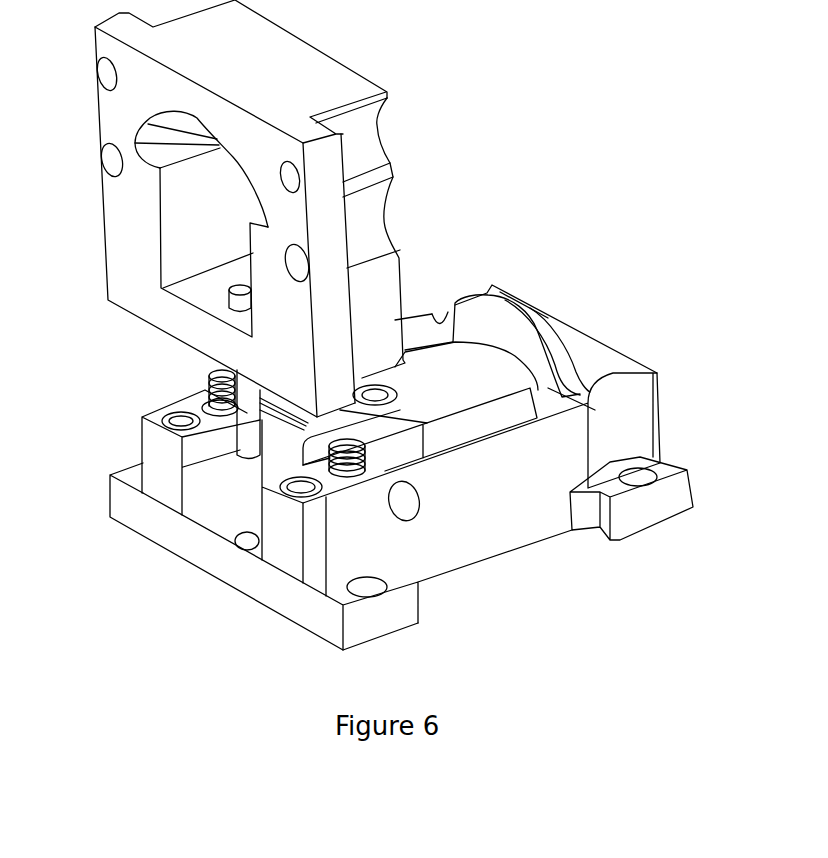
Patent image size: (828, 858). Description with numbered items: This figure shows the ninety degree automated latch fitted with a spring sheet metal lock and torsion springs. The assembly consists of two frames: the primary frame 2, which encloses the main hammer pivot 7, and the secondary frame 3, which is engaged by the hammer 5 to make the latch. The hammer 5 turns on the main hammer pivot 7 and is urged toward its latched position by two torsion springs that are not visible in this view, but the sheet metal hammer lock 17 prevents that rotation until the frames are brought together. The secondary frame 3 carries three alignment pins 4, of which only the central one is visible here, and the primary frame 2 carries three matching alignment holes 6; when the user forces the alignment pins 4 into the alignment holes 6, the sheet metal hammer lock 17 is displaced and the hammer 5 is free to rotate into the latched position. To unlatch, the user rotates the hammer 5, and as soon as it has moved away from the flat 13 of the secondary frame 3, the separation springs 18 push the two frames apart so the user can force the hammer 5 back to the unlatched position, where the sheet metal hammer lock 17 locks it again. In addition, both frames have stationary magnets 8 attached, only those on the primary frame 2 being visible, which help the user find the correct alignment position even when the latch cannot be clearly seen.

The primary frame 2 is at (627, 402).
The secondary frame 3 is at (323, 92).
The alignment pin 4 is at (247, 402).
The hammer 5 is at (449, 383).
The alignment holes 6 is at (240, 548).
The main hammer pivot 7 is at (413, 513).
The stationary magnets 8 is at (181, 422).
The magnetic bolts 13 is at (176, 158).
The sheet metal hammer lock 17 is at (243, 487).
The separation springs 18 is at (383, 449).